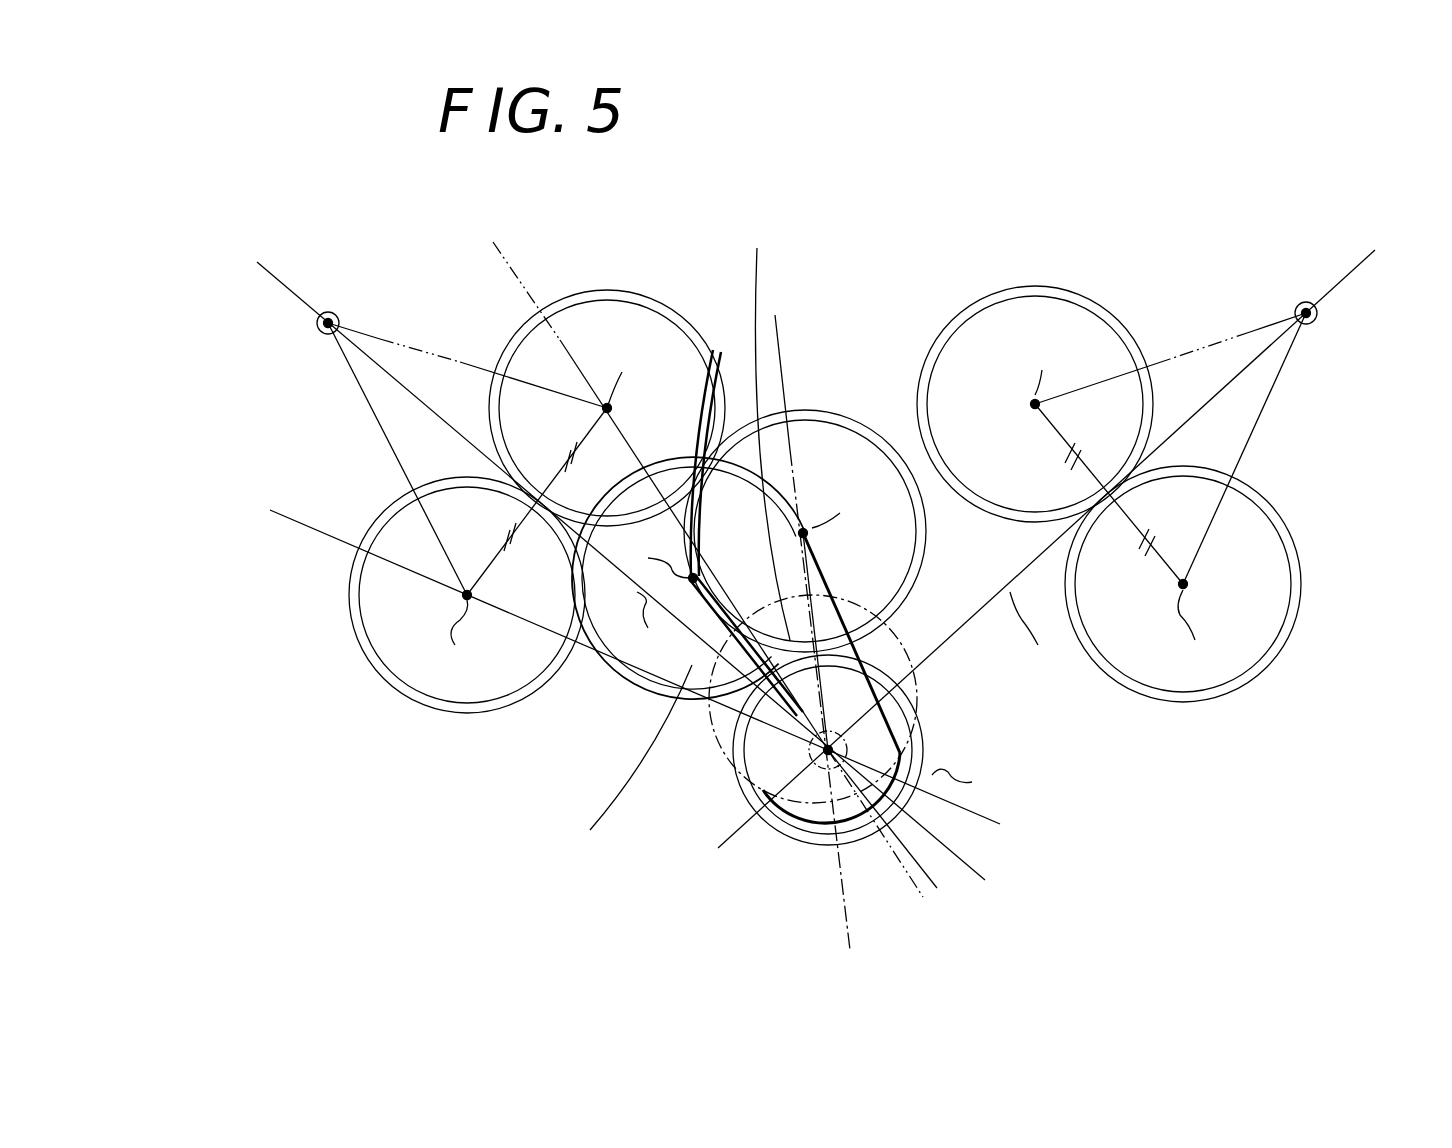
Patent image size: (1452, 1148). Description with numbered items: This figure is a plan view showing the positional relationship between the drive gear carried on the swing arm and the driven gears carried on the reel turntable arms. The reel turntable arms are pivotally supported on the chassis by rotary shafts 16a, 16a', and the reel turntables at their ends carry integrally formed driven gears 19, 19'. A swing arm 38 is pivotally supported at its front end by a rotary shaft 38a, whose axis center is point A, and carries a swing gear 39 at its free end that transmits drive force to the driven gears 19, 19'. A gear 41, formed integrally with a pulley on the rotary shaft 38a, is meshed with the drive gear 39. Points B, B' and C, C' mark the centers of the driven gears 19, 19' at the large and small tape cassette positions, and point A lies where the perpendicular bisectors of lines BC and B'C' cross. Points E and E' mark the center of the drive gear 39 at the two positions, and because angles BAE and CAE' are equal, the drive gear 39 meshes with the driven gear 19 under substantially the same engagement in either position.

The rotary shaft 16a is at (621, 556).
The rotary shaft 16a' is at (1046, 531).
The driven gear 19 is at (635, 539).
The driven gear 19' is at (1163, 457).
The swing gear 39 is at (642, 676).
The gear 41 is at (925, 715).
The swing arm 38 is at (712, 742).
The rotary shaft 38a is at (773, 843).